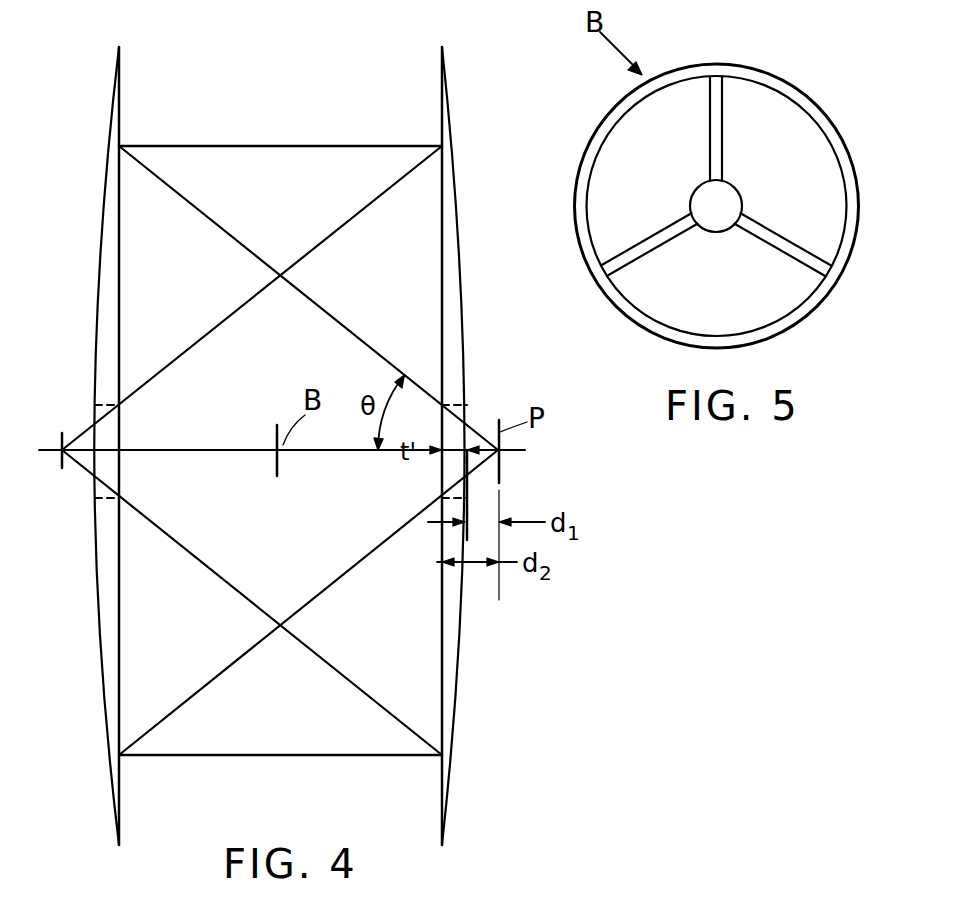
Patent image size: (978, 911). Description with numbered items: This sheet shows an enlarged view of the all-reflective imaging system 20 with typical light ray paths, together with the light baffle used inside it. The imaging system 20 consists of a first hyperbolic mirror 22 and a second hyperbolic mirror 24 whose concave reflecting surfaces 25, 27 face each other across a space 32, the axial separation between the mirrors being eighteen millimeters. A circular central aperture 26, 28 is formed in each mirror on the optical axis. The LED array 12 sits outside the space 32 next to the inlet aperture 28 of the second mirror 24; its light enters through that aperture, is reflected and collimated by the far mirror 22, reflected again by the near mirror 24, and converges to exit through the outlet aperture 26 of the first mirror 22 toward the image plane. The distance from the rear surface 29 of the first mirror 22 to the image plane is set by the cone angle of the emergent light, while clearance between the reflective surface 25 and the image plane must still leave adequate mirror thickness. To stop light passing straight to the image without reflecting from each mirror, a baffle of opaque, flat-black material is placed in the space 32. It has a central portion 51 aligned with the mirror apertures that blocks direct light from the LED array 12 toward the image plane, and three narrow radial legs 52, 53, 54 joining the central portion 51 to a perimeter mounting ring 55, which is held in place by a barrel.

In FIG. 4, the LED array 12 is at (62, 462).
In FIG. 4, the imaging system 20 is at (340, 80).
In FIG. 4, the first hyperbolic mirror 22 is at (450, 112).
In FIG. 4, the second hyperbolic mirror 24 is at (110, 118).
In FIG. 4, the concave reflecting surface of first mirror 25 is at (440, 603).
In FIG. 4, the central aperture of first mirror 26 is at (102, 398).
In FIG. 4, the concave reflecting surface of second mirror 27 is at (120, 620).
In FIG. 4, the central aperture of second mirror 28 is at (455, 400).
In FIG. 4, the rear surface of first mirror 29 is at (463, 600).
In FIG. 4, the space between mirrors 32 is at (232, 435).
In FIG. 5, the central portion of baffle 51 is at (742, 192).
In FIG. 5, the radial leg of baffle 52 is at (708, 130).
In FIG. 5, the radial leg of baffle 53 is at (625, 262).
In FIG. 5, the radial leg of baffle 54 is at (810, 262).
In FIG. 5, the perimeter mounting ring 55 is at (773, 340).